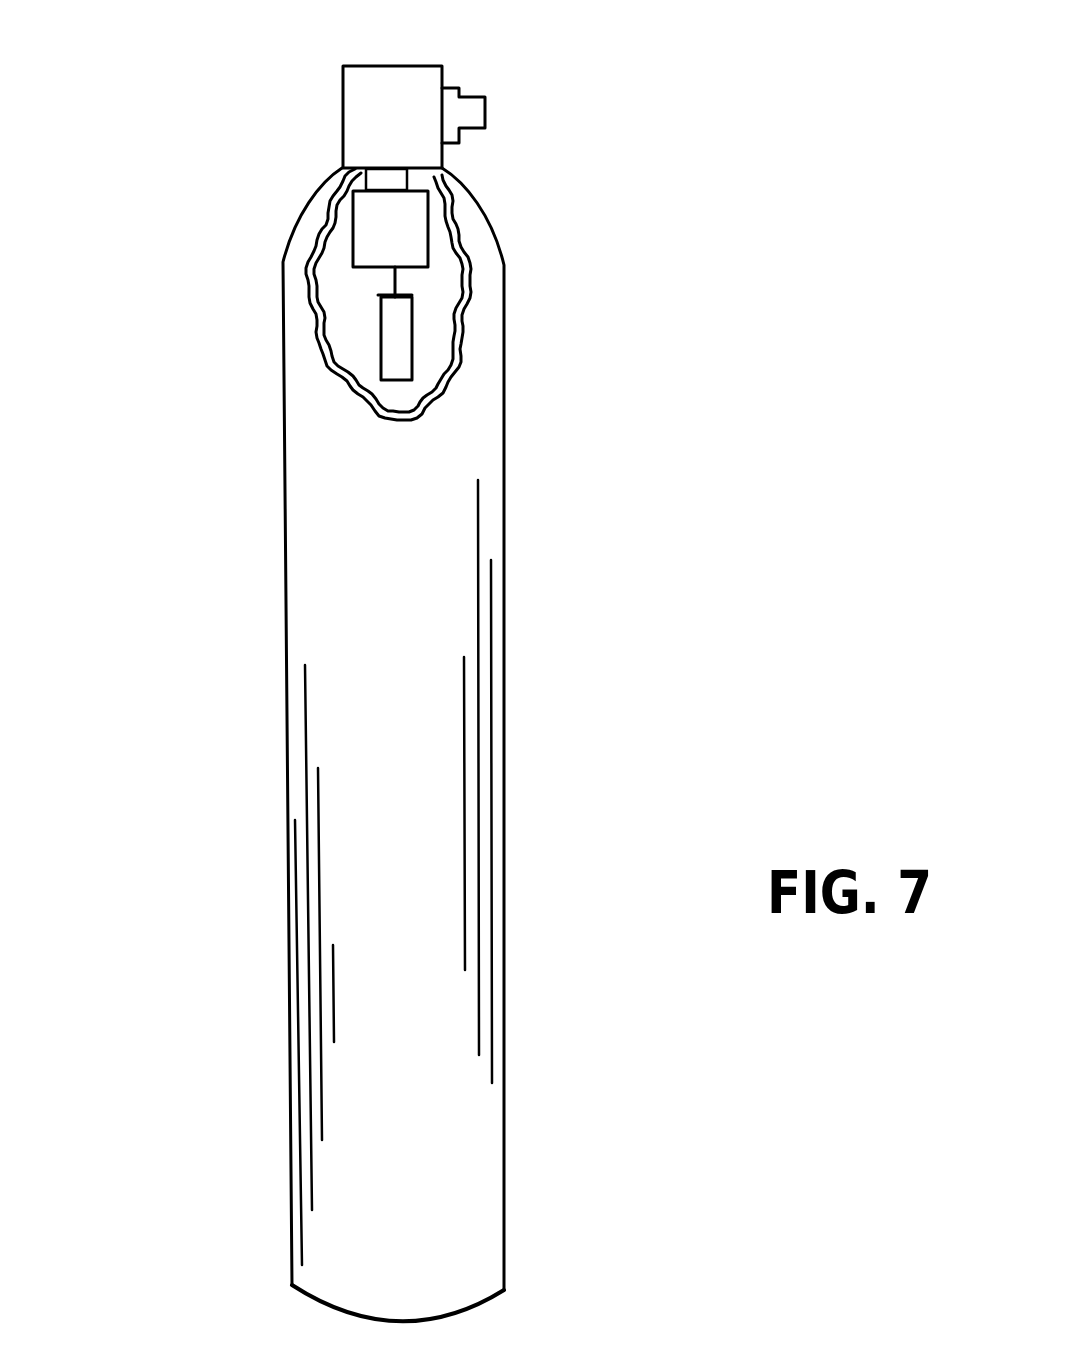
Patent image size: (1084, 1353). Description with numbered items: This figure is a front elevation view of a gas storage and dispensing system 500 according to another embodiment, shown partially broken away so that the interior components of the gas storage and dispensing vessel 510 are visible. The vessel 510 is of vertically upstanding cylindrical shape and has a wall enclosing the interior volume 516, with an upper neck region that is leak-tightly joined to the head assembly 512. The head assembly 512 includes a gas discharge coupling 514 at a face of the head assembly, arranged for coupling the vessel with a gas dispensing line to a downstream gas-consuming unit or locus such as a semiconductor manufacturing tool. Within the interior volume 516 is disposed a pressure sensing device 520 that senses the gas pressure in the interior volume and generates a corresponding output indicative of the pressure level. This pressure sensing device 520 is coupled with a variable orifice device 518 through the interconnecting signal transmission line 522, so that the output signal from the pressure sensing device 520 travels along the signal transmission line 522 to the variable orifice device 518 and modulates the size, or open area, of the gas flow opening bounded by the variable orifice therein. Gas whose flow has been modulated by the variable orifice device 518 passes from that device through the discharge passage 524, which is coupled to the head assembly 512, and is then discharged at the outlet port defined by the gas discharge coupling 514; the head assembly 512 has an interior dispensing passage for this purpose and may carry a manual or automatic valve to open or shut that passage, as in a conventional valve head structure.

The gas storage and dispensing system 500 is at (652, 173).
The gas storage and dispensing vessel 510 is at (477, 1222).
The head assembly 512 is at (365, 121).
The gas discharge coupling 514 is at (481, 113).
The interior volume 516 is at (440, 293).
The variable orifice device 518 is at (390, 232).
The pressure sensing device 520 is at (400, 342).
The signal transmission line 522 is at (390, 285).
The discharge passage 524 is at (388, 177).